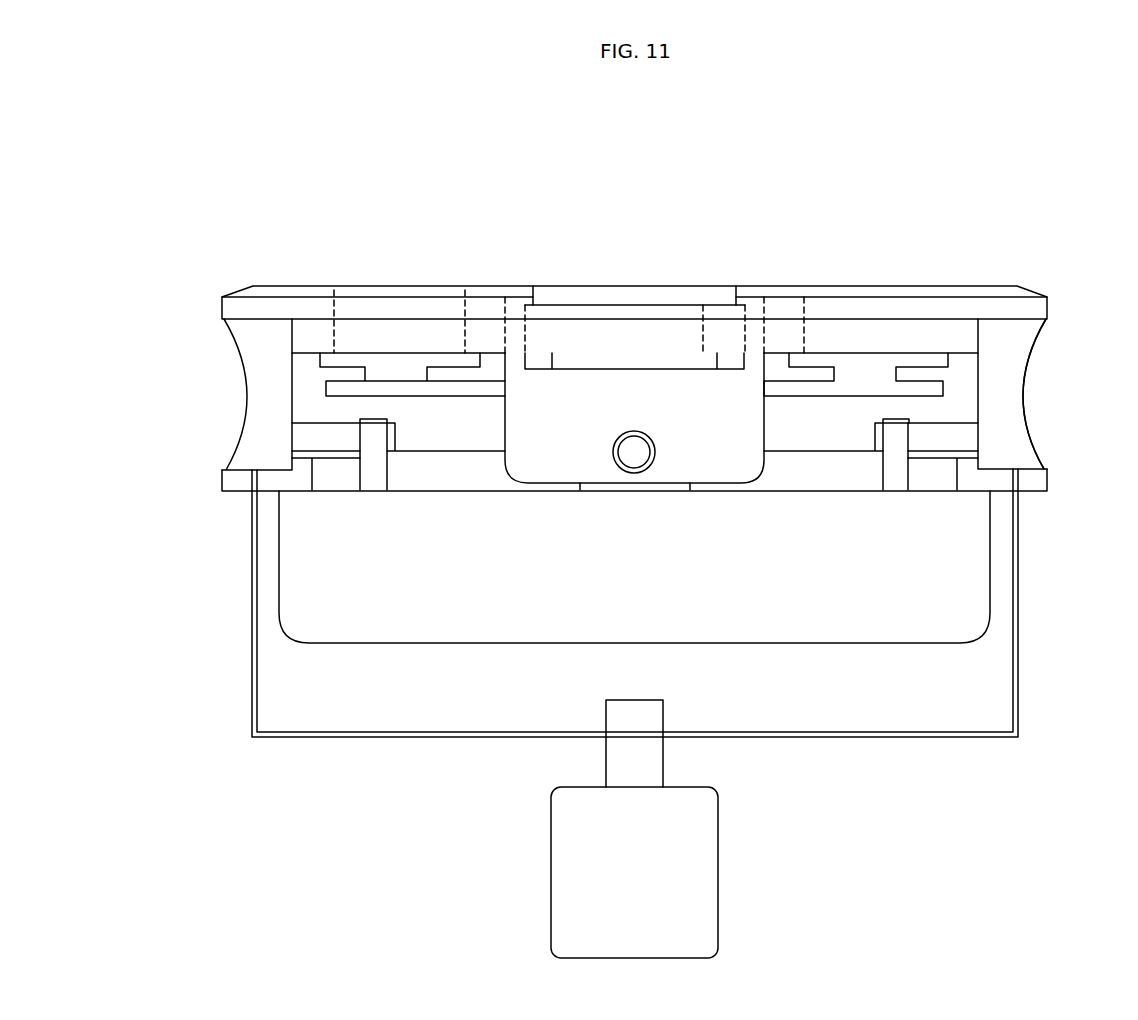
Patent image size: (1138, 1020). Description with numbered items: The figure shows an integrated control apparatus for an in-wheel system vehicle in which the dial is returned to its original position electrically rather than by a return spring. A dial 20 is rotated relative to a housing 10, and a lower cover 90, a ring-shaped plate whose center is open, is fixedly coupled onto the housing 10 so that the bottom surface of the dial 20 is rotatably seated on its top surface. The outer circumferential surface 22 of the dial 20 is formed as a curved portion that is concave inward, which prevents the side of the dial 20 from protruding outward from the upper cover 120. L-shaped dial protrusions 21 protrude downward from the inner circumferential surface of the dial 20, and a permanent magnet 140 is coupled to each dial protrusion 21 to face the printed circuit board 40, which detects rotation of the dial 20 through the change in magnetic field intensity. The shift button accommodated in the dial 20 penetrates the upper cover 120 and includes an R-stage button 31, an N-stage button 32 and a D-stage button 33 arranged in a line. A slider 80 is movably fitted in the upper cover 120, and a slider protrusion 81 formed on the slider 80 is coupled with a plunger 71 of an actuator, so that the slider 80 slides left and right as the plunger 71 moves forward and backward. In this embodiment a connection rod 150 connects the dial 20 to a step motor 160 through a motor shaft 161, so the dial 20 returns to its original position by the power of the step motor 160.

The housing 10 is at (303, 560).
The dial 20 is at (1008, 354).
The dial protrusion 21 is at (322, 430).
The outer circumferential surface 22 is at (1023, 397).
The R-stage button 31 is at (393, 340).
The N-stage button 32 is at (600, 335).
The D-stage button 33 is at (904, 332).
The printed circuit board 40 is at (782, 390).
The plunger 71 is at (635, 453).
The slider 80 is at (702, 297).
The slider protrusion 81 is at (642, 403).
The lower cover 90 is at (1035, 484).
The upper cover 120 is at (997, 308).
The permanent magnet 140 is at (376, 418).
The connection rod 150 is at (252, 628).
The step motor 160 is at (703, 897).
The motor shaft 161 is at (651, 761).